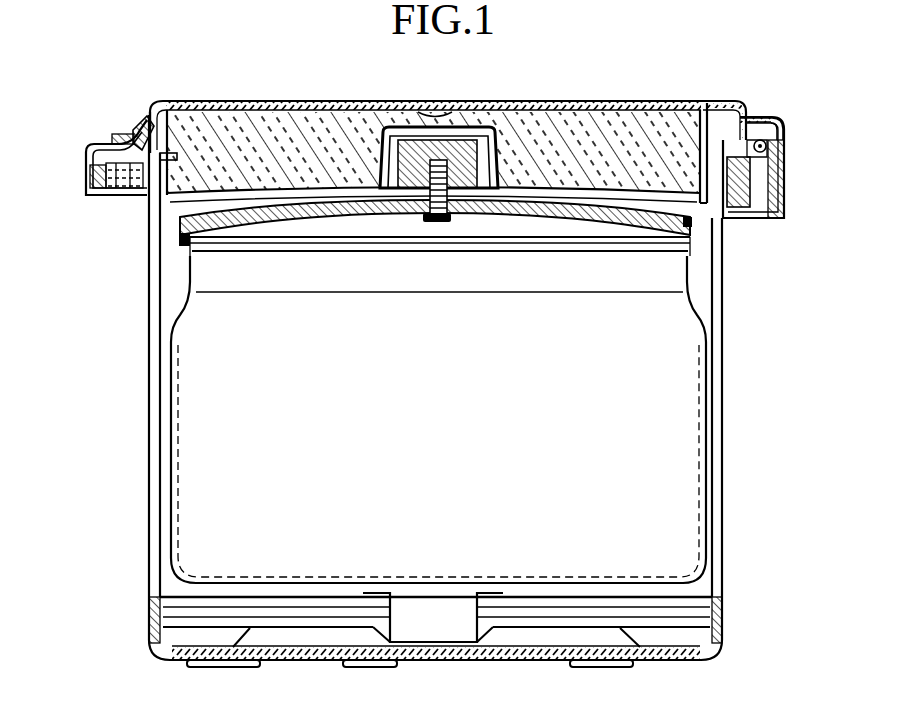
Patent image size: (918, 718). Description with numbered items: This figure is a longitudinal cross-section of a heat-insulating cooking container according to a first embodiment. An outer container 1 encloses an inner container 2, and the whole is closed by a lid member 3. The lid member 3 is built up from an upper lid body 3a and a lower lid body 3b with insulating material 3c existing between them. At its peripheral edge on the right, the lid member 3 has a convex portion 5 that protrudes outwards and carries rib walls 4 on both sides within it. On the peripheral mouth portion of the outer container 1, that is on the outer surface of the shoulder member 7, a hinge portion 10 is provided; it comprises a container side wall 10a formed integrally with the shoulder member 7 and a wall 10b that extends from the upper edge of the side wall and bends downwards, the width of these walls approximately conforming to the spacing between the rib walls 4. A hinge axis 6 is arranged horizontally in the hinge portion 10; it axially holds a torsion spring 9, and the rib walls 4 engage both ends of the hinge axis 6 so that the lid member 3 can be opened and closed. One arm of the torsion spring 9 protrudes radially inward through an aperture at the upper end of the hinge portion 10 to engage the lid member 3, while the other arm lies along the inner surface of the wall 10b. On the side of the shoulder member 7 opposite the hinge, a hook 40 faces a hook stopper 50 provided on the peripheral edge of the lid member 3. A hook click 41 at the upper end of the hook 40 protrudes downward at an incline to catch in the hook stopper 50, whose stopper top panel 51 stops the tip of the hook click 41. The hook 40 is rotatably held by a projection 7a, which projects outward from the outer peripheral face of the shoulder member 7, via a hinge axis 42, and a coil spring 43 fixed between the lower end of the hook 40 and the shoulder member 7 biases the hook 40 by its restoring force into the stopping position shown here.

The outer container 1 is at (725, 337).
The inner container 2 is at (697, 292).
The lid member 3 is at (647, 101).
The upper lid body 3a is at (526, 104).
The lower lid body 3b is at (368, 133).
The insulating material 3c is at (284, 134).
The rib walls 4 is at (742, 118).
The convex portion 5 is at (761, 108).
The hinge axis 6 is at (781, 128).
The shoulder member 7 is at (145, 222).
The projection 7a is at (112, 144).
The torsion spring 9 is at (781, 186).
The hinge portion 10 is at (786, 219).
The container side wall 10a is at (748, 162).
The wall 10b is at (786, 148).
The hook 40 is at (82, 155).
The hook click 41 is at (145, 133).
The hinge axis 42 is at (124, 195).
The coil spring 43 is at (100, 186).
The hook stopper 50 is at (148, 103).
The stopper top panel 51 is at (122, 140).